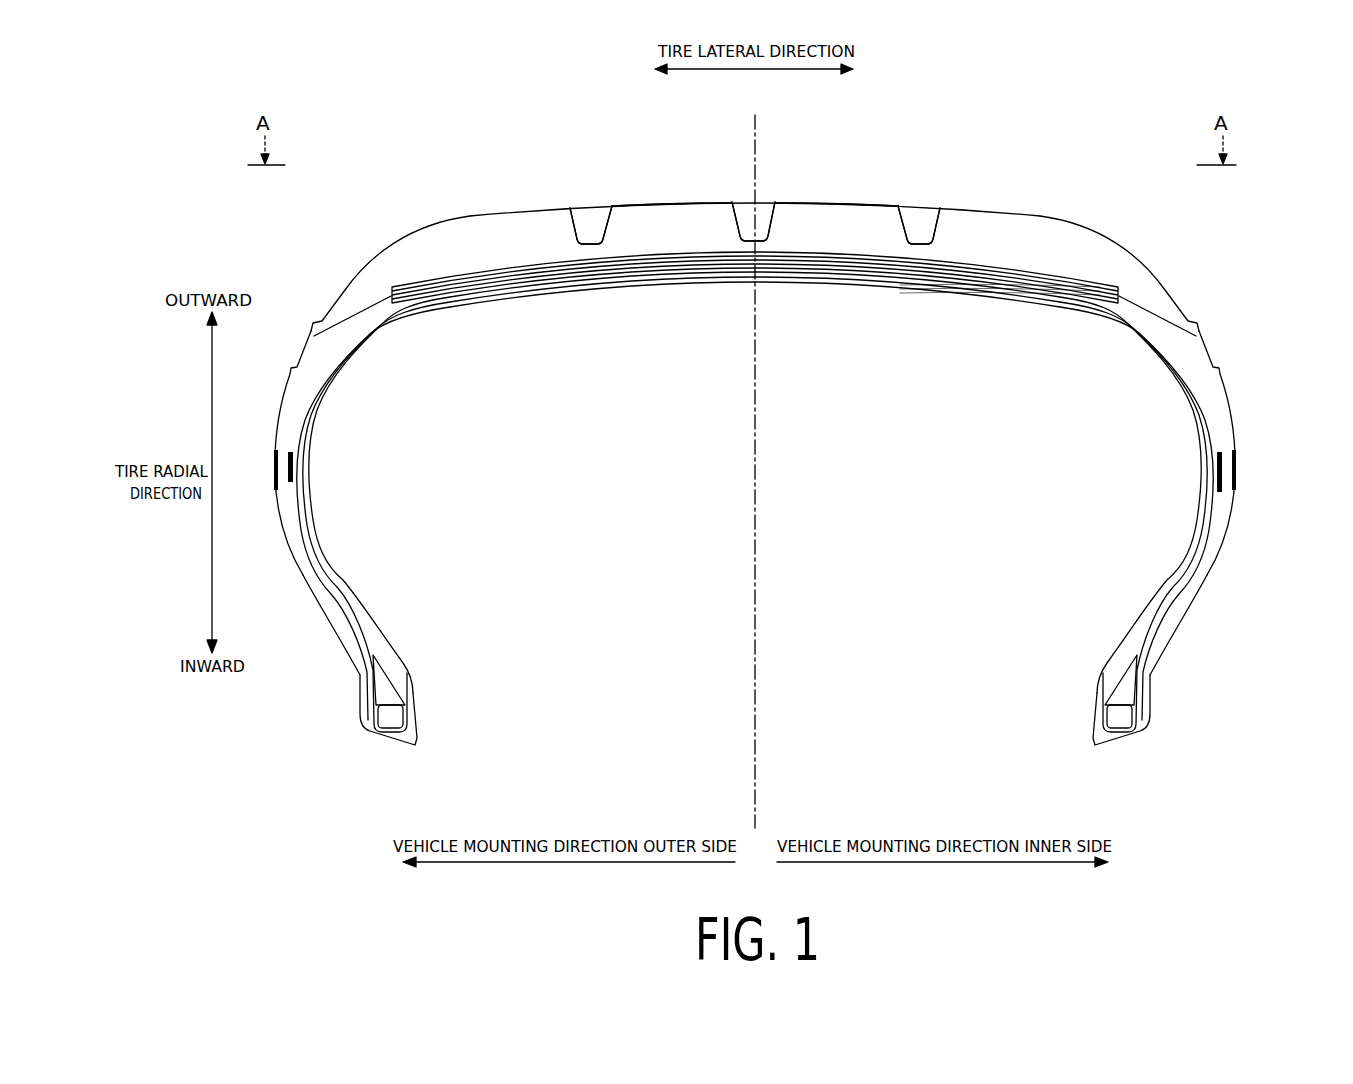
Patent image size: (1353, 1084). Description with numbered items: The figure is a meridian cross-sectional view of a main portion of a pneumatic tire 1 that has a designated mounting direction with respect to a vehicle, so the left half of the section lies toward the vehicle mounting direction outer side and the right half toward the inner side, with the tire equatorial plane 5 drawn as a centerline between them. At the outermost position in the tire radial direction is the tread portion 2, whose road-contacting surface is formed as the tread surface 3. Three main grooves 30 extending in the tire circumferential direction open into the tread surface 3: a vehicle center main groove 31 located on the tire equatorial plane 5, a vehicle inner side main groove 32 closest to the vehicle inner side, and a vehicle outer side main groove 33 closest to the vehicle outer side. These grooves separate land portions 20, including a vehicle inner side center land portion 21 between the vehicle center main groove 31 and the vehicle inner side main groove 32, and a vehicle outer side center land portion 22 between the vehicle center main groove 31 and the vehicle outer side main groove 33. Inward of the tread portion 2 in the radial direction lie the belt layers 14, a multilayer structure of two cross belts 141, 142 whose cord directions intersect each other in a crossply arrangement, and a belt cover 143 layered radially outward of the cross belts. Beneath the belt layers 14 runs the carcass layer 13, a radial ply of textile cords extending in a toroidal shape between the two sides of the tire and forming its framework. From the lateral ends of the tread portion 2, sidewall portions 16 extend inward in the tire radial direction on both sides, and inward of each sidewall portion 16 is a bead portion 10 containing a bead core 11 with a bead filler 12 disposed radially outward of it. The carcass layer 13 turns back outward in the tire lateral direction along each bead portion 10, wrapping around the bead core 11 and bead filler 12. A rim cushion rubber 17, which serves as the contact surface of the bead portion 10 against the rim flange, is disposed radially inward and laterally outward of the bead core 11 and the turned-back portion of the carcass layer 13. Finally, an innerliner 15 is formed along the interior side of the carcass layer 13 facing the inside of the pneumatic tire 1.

The pneumatic tire 1 is at (412, 110).
The tread portion 2 is at (530, 208).
The tread surface 3 is at (472, 208).
The tire equatorial plane 5 is at (758, 152).
The bead portion 10 is at (1152, 707).
The bead core 11 is at (1118, 716).
The bead filler 12 is at (1126, 678).
The carcass layer 13 is at (1128, 321).
The belt layers 14 is at (1073, 366).
The cross belt 141 is at (1060, 293).
The cross belt 142 is at (1020, 283).
The belt cover 143 is at (965, 273).
The innerliner 15 is at (1193, 398).
The sidewall portion 16 is at (1236, 497).
The rim cushion rubber 17 is at (1165, 652).
The land portion 20 is at (764, 146).
The vehicle inner side center land portion 21 is at (848, 202).
The vehicle outer side center land portion 22 is at (652, 203).
The main groove 30 is at (780, 184).
The vehicle center main groove 31 is at (747, 198).
The vehicle inner side main groove 32 is at (922, 205).
The vehicle outer side main groove 33 is at (593, 205).